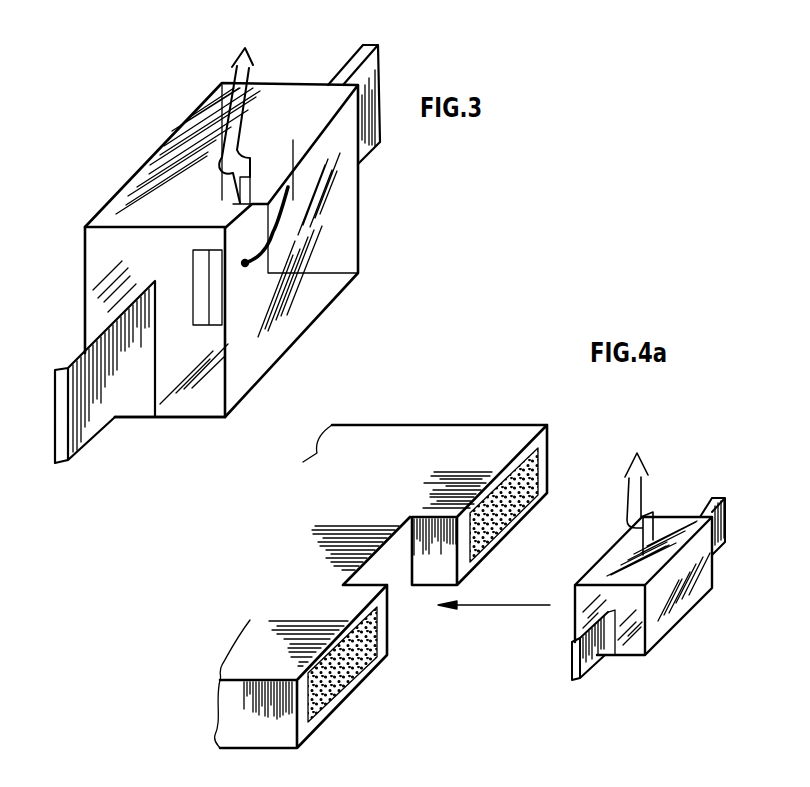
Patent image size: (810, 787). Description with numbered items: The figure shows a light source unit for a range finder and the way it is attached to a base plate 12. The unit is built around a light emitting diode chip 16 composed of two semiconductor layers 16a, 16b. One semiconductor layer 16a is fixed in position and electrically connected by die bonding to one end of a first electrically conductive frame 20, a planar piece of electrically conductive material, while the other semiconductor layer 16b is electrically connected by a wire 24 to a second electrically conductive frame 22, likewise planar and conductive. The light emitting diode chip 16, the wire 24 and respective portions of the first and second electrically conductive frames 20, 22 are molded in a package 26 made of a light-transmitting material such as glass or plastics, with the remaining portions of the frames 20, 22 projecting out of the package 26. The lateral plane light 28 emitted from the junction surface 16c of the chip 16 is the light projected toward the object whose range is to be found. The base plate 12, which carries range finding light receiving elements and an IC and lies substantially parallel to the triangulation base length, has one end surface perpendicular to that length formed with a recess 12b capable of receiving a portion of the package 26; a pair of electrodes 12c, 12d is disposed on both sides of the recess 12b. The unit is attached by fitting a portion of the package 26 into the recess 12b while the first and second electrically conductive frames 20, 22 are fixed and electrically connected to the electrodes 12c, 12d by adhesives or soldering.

In FIG. 4A, the base plate 12 is at (453, 448).
In FIG. 4A, the recess 12b is at (420, 548).
In FIG. 4A, the electrode 12c is at (338, 677).
In FIG. 4A, the electrode 12d is at (510, 507).
In FIG. 3, the light emitting diode chip 16 is at (247, 302).
In FIG. 3, the semiconductor layer 16a is at (197, 300).
In FIG. 3, the semiconductor layer 16b is at (224, 330).
In FIG. 3, the junction surface 16c is at (208, 276).
In FIG. 3, the first electrically conductive frame 20 is at (95, 425).
In FIG. 4A, the first electrically conductive frame 20 is at (598, 655).
In FIG. 3, the second electrically conductive frame 22 is at (373, 143).
In FIG. 4A, the second electrically conductive frame 22 is at (727, 510).
In FIG. 3, the wire 24 is at (273, 227).
In FIG. 3, the package 26 is at (347, 243).
In FIG. 4A, the package 26 is at (668, 625).
In FIG. 3, the lateral plane light 28 is at (253, 73).
In FIG. 4A, the lateral plane light 28 is at (633, 491).